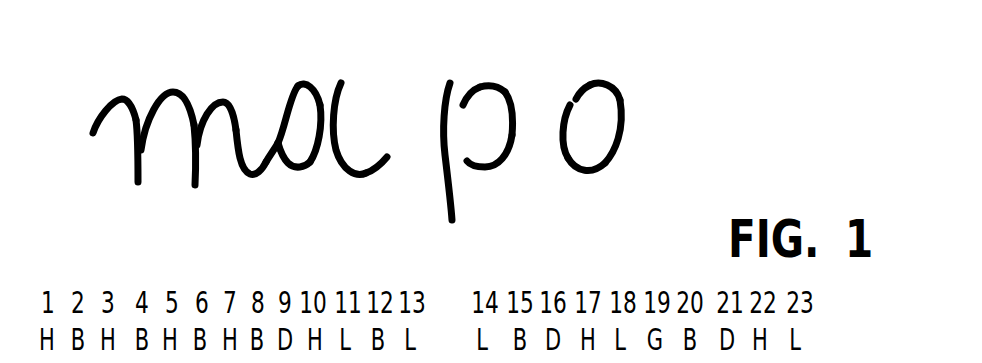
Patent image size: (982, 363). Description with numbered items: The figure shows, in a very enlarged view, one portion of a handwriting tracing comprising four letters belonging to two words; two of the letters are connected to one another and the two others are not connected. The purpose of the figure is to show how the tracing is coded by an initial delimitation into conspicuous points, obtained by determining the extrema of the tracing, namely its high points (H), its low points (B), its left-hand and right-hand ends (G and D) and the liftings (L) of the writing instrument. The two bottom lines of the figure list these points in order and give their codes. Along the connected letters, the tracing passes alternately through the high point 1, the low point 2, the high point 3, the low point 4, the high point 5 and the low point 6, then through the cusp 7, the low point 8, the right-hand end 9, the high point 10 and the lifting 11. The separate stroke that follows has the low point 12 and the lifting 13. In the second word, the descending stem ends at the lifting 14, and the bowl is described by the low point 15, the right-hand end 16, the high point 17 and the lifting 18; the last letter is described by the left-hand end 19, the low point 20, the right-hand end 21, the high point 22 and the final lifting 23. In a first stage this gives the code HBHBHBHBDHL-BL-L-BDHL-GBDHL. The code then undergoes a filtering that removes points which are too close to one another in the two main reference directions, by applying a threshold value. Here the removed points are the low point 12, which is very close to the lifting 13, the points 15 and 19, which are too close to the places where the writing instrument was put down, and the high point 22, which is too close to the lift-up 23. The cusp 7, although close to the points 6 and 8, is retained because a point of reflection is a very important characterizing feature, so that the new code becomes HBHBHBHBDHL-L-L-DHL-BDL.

The high point 1 is at (122, 97).
The low point 2 is at (138, 181).
The high point 3 is at (170, 88).
The low point 4 is at (196, 180).
The high point 5 is at (218, 98).
The low point 6 is at (250, 173).
The point of reflection or cusp 7 is at (272, 140).
The low point 8 is at (300, 168).
The right-hand portion 9 is at (322, 147).
The high point 10 is at (302, 84).
The lifting of the writing instrument 11 is at (275, 117).
The low point 12 is at (361, 177).
The lifting of the writing instrument 13 is at (386, 160).
The lifting of the writing instrument 14 is at (452, 220).
The low point 15 is at (480, 168).
The right-hand portion 16 is at (520, 127).
The high point 17 is at (490, 82).
The lifting of the writing instrument 18 is at (463, 105).
The left-hand portion 19 is at (557, 133).
The low point 20 is at (593, 173).
The right-hand portion 21 is at (627, 138).
The high point 22 is at (600, 82).
The lifting of the writing instrument 23 is at (580, 97).